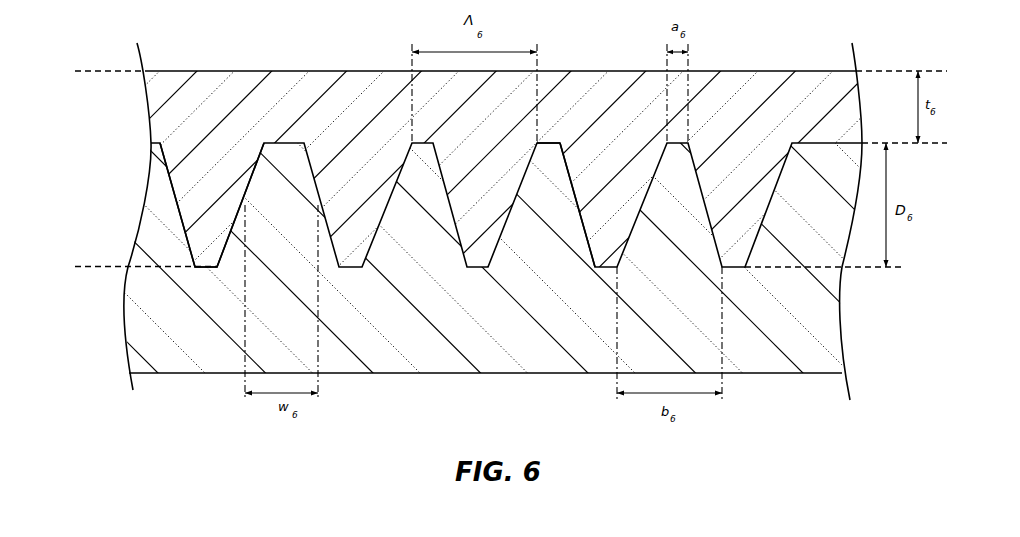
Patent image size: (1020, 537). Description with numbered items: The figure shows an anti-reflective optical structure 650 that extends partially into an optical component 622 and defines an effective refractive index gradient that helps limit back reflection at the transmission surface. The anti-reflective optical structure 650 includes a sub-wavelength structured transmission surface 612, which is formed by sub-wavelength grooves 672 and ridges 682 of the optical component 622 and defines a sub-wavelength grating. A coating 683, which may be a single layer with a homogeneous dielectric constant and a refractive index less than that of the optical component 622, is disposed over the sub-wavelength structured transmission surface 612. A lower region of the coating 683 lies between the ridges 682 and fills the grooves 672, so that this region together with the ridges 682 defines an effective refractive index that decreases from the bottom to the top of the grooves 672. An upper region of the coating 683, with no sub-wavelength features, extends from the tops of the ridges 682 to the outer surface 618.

The sub-wavelength structured transmission surface 612 is at (178, 186).
The outer surface 618 is at (769, 71).
The optical component 622 is at (843, 305).
The anti-reflective optical structure 650 is at (78, 71).
The sub-wavelength grooves 672 is at (567, 165).
The ridges 682 is at (544, 143).
The coating 683 is at (322, 71).